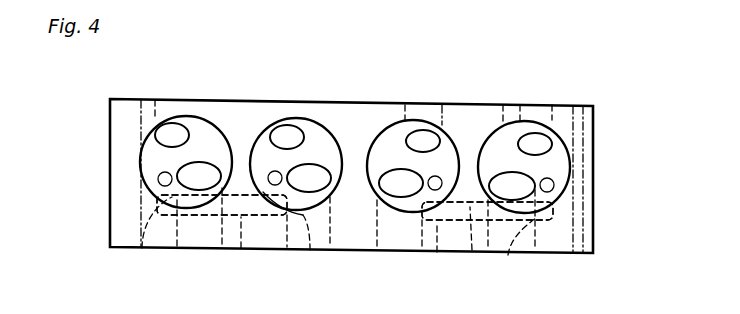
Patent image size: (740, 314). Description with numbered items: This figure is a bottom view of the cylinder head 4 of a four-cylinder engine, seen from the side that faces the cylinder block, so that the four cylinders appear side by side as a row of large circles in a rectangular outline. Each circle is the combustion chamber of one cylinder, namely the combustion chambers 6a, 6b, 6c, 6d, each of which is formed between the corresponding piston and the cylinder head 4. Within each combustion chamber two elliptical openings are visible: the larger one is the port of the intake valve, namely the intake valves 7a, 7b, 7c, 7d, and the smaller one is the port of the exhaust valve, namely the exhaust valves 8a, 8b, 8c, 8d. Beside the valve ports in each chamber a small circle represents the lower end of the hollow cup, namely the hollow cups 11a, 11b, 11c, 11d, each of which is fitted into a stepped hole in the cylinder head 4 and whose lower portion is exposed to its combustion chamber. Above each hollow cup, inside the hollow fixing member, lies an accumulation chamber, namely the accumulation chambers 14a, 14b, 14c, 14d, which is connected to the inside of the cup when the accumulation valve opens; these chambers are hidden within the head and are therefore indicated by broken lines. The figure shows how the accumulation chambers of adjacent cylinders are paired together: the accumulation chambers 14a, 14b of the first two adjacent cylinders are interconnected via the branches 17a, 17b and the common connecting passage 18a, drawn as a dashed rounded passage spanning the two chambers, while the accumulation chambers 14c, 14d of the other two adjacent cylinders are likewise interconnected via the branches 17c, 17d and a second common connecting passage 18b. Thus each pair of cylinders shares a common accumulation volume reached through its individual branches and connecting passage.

The cylinder head 4 is at (593, 192).
The combustion chamber 6a is at (152, 165).
The combustion chamber 6b is at (318, 147).
The combustion chamber 6c is at (387, 145).
The combustion chamber 6d is at (558, 158).
The intake valve 7a is at (200, 172).
The intake valve 7b is at (322, 176).
The intake valve 7c is at (407, 184).
The intake valve 7d is at (500, 182).
The exhaust valve 8a is at (167, 137).
The exhaust valve 8b is at (300, 130).
The exhaust valve 8c is at (421, 135).
The exhaust valve 8d is at (540, 146).
The hollow cup 11a is at (158, 183).
The hollow cup 11b is at (272, 172).
The hollow cup 11c is at (445, 178).
The hollow cup 11d is at (549, 192).
The accumulation chamber 14a is at (150, 195).
The accumulation chamber 14b is at (270, 195).
The accumulation chamber 14c is at (441, 178).
The accumulation chamber 14d is at (552, 204).
The branch 17a is at (141, 248).
The branch 17b is at (310, 250).
The branch 17c is at (437, 252).
The branch 17d is at (508, 255).
The common connecting passage 18a is at (241, 248).
The common connecting passage 18b is at (472, 250).